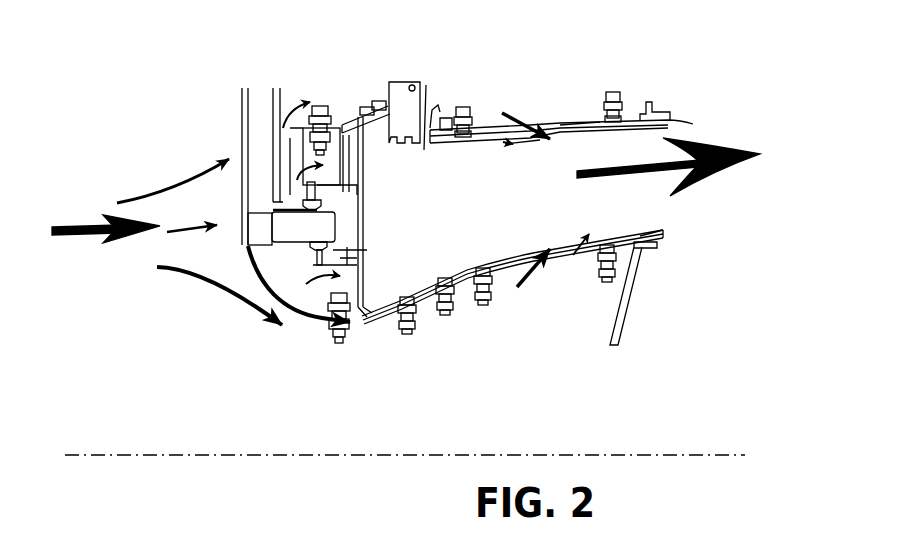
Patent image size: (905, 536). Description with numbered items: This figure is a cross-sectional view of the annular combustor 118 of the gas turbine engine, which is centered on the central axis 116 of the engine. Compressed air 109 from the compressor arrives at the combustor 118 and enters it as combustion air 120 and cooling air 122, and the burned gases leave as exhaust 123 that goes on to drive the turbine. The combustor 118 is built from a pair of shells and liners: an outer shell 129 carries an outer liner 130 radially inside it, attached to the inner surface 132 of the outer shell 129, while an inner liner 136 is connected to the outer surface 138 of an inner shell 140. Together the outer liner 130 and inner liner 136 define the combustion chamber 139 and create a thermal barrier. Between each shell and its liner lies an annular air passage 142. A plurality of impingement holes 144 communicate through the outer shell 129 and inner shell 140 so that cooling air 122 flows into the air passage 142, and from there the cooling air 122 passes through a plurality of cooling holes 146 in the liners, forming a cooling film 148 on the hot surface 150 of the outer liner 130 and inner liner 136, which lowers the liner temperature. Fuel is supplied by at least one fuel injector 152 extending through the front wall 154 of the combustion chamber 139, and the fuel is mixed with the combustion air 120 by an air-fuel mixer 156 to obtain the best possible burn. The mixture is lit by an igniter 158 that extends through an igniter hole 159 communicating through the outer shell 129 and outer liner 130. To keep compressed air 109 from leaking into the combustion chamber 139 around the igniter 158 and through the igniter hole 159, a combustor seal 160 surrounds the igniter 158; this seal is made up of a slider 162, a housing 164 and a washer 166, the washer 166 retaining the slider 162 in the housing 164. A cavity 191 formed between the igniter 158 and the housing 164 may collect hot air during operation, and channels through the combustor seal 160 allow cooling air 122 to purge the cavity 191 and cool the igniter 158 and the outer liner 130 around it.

The compressed air 109 is at (193, 267).
The central axis 116 is at (265, 455).
The combustor 118 is at (670, 70).
The combustion air 120 is at (307, 285).
The cooling air 122 is at (557, 277).
The exhaust 123 is at (761, 154).
The outer shell 129 is at (592, 120).
The outer liner 130 is at (693, 110).
The inner surface 132 is at (367, 137).
The inner liner 136 is at (661, 232).
The outer surface 138 is at (513, 260).
The combustion chamber 139 is at (461, 225).
The inner shell 140 is at (595, 258).
The annular air passage 142 is at (563, 127).
The impingement holes 144 is at (498, 130).
The cooling holes 146 is at (507, 137).
The cooling film 148 is at (517, 153).
The hot surface 150 is at (570, 133).
The fuel injector 152 is at (254, 252).
The front wall 154 is at (357, 173).
The air-fuel mixer 156 is at (363, 260).
The igniter 158 is at (417, 110).
The igniter hole 159 is at (395, 98).
The combustor seal 160 is at (441, 100).
The slider 162 is at (360, 108).
The housing 164 is at (370, 115).
The washer 166 is at (367, 105).
The cavity 191 is at (425, 150).